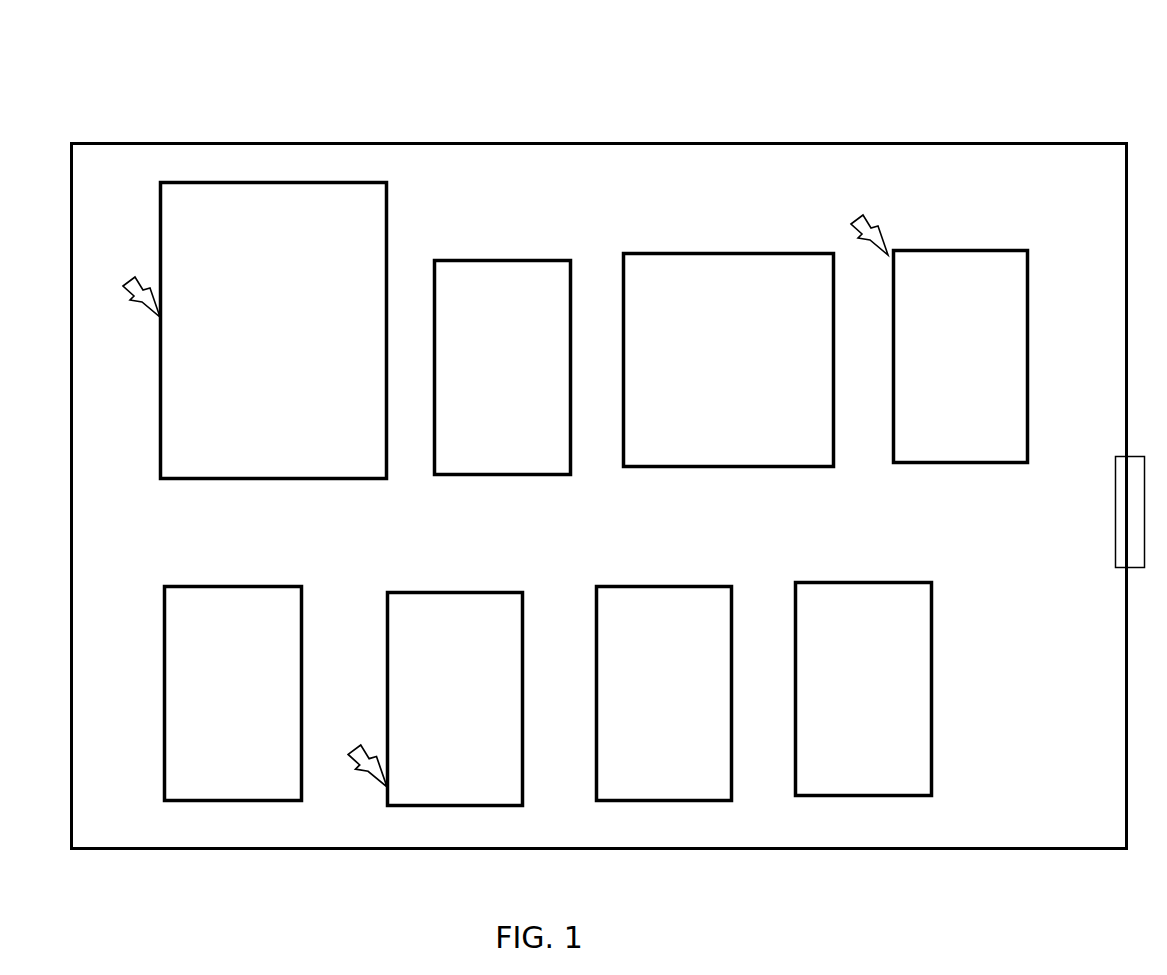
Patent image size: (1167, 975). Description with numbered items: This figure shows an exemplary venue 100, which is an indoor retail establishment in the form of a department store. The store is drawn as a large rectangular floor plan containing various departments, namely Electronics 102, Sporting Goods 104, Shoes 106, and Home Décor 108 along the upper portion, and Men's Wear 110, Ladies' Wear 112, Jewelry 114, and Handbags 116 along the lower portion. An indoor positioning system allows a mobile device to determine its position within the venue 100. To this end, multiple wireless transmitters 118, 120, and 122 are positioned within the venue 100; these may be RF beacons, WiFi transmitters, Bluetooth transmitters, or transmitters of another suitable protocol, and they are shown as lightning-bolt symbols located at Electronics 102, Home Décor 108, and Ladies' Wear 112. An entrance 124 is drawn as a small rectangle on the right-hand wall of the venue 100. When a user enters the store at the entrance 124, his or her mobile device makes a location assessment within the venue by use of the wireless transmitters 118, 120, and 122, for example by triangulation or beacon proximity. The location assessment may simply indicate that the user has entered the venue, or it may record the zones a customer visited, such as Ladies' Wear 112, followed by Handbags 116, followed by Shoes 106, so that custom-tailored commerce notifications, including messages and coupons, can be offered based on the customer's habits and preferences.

The venue 100 is at (148, 98).
The department 102 is at (274, 331).
The department 104 is at (503, 368).
The Shoes department 106 is at (729, 360).
The department 108 is at (961, 357).
The department 110 is at (233, 694).
The Ladies' Wear department 112 is at (455, 699).
The department 114 is at (664, 694).
The Handbags department 116 is at (864, 689).
The wireless transmitter 118 is at (141, 308).
The wireless transmitter 120 is at (851, 223).
The wireless transmitter 122 is at (357, 738).
The entrance 124 is at (1115, 534).